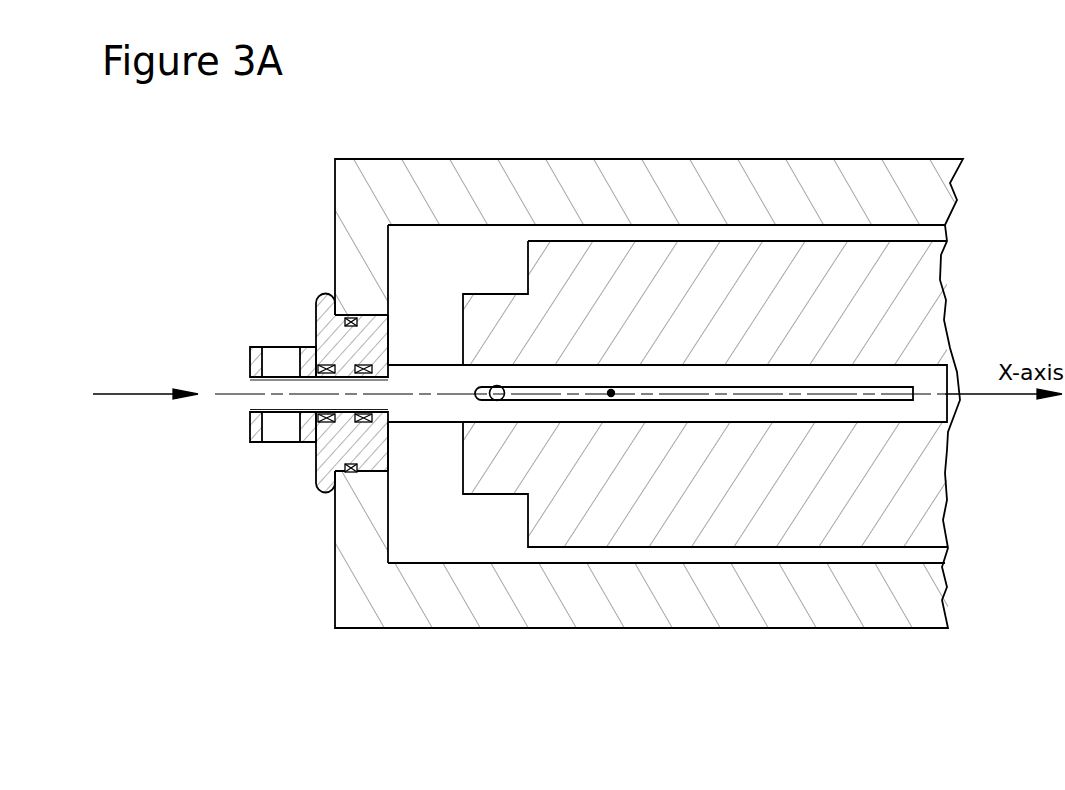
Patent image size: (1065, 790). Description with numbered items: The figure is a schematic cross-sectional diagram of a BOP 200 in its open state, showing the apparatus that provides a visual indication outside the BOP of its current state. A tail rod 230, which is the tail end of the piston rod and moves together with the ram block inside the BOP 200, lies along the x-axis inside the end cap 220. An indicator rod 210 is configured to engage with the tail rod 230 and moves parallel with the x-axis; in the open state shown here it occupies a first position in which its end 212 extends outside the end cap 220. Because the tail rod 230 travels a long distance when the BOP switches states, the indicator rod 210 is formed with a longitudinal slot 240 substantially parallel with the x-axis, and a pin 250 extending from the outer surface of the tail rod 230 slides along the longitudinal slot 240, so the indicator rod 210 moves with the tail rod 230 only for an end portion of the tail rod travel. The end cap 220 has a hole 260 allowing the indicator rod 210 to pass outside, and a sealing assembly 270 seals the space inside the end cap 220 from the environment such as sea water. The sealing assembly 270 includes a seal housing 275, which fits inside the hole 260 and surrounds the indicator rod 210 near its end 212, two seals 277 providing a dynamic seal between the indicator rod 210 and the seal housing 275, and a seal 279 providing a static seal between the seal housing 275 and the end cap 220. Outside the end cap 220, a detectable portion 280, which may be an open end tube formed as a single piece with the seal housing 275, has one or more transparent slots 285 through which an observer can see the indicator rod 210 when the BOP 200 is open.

The BOP 200 is at (945, 82).
The indicator rod 210 is at (932, 407).
The end of the indicator rod 212 is at (270, 396).
The end cap 220 is at (370, 173).
The tail rod 230 is at (790, 527).
The longitudinal slot 240 is at (611, 394).
The pin 250 is at (489, 400).
The hole 260 is at (274, 294).
The sealing assembly 270 is at (301, 525).
The seal housing 275 is at (353, 350).
The seals 277 is at (327, 367).
The seal 279 is at (350, 472).
The detectable portion 280 is at (252, 361).
The transparent slots 285 is at (272, 447).